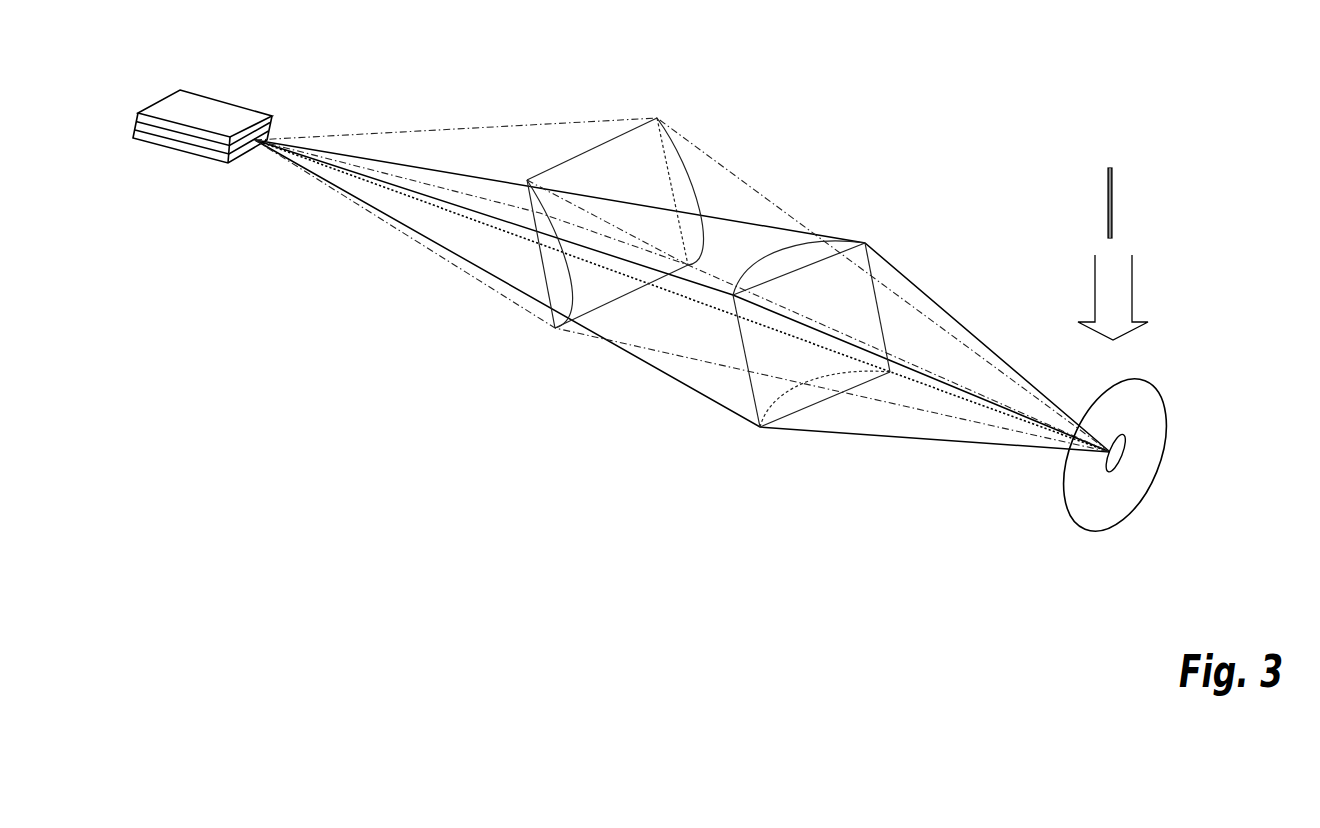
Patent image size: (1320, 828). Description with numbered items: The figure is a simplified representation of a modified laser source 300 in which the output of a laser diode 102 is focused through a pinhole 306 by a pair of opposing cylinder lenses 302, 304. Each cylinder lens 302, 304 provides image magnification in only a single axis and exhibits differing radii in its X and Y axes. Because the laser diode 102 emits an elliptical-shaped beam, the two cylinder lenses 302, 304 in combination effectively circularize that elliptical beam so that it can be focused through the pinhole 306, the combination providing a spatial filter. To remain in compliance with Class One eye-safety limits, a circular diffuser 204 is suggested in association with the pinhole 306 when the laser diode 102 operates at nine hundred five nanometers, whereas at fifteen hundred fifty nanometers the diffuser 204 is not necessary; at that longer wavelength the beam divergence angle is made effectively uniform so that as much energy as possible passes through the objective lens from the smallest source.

The laser diode 102 is at (208, 158).
The modified laser source 300 is at (973, 610).
The cylinder lens 302 is at (600, 143).
The cylinder lens 304 is at (843, 247).
The circular diffuser 204 is at (1108, 206).
The pinhole 306 is at (1101, 399).